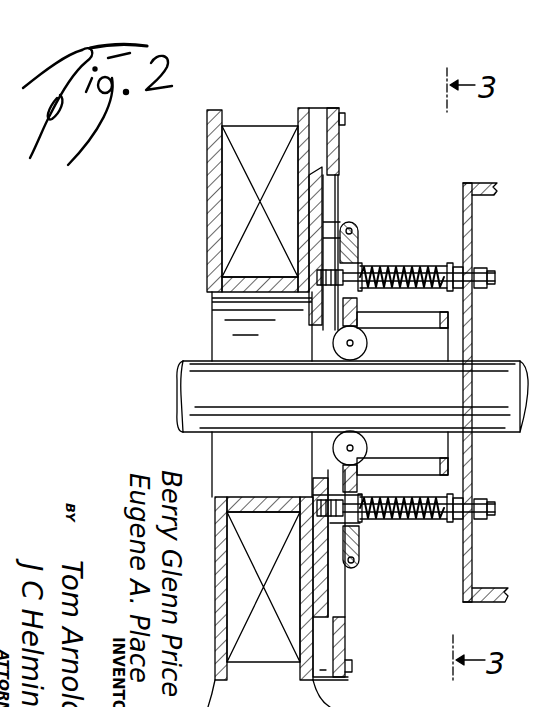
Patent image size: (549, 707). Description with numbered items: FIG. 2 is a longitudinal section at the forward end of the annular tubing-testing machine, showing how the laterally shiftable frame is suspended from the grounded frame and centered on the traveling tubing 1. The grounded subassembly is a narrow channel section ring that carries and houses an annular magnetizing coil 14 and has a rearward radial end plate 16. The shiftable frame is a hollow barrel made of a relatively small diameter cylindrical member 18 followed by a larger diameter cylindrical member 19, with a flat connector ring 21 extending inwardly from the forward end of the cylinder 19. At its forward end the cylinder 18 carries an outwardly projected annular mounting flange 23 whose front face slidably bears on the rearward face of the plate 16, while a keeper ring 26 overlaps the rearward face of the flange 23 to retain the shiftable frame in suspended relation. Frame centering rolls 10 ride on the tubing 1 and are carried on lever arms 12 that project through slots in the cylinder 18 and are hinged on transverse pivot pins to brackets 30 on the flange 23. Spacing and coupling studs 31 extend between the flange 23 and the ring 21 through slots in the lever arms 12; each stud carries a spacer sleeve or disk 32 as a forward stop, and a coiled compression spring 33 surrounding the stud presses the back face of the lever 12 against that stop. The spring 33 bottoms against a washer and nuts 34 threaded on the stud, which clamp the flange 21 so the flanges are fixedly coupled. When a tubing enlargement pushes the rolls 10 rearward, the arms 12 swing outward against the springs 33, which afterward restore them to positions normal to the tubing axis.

The tube 1 is at (183, 361).
The frame centering rolls 10 is at (352, 430).
The lever arms 12 is at (362, 562).
The annular magnetizing coil 14 is at (270, 652).
The rearward radial end plate 16 is at (332, 693).
The small diameter cylindrical member 18 is at (442, 340).
The larger diameter cylindrical member 19 is at (485, 183).
The connector ring 21 is at (472, 230).
The annular mounting flange 23 is at (335, 598).
The keeper ring 26 is at (340, 637).
The brackets 30 is at (332, 225).
The spacing and coupling studs 31 is at (496, 278).
The spacer sleeve or disk 32 is at (352, 263).
The coiled compression spring 33 is at (412, 520).
The nuts 34 is at (458, 272).